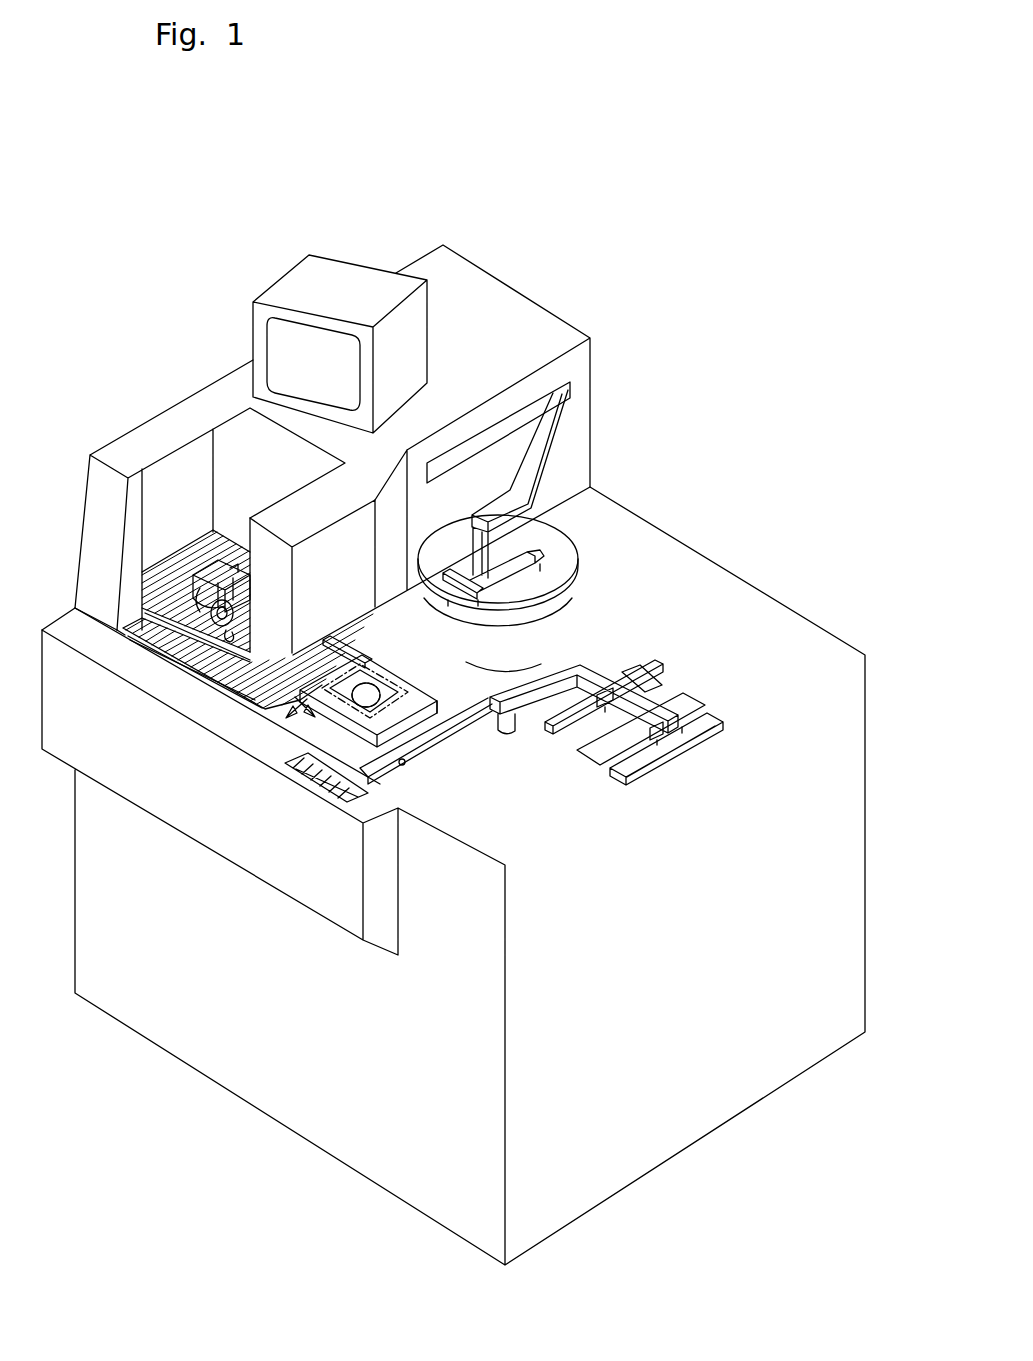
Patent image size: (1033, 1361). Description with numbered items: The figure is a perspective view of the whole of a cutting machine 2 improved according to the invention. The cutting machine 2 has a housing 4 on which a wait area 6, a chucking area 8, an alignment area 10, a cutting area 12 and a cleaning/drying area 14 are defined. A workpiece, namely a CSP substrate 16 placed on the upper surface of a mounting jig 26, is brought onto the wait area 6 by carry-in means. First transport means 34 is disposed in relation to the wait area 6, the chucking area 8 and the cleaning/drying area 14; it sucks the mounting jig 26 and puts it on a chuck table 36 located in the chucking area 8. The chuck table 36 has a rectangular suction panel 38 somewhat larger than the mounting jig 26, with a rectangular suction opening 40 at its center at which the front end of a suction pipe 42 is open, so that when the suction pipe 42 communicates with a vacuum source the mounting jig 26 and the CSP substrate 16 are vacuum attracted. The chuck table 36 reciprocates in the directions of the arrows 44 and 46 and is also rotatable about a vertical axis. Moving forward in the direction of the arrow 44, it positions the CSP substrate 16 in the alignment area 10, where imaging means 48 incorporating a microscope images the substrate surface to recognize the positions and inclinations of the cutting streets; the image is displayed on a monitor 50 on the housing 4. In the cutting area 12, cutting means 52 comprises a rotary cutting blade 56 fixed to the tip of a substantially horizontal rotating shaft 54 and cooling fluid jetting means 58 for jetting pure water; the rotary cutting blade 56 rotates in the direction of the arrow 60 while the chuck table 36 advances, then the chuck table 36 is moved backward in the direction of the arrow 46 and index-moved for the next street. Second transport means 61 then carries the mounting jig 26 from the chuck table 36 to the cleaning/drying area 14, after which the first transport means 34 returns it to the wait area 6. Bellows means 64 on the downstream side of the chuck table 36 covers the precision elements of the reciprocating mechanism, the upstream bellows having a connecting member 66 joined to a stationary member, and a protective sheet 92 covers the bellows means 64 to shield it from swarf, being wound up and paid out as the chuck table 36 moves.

The cutting machine 2 is at (652, 350).
The housing 4 is at (276, 1122).
The wait area 6 is at (578, 762).
The chucking area 8 is at (370, 640).
The alignment area 10 is at (262, 662).
The cutting area 12 is at (140, 650).
The cleaning/drying area 14 is at (572, 605).
The CSP substrate 16 is at (387, 684).
The mounting jig 26 is at (410, 712).
The first transport means 34 is at (600, 660).
The chuck table 36 is at (300, 730).
The suction panel 38 is at (436, 716).
The suction opening 40 is at (345, 687).
The suction pipe 42 is at (365, 698).
The arrow (forward moving direction) 44 is at (371, 666).
The arrow (backward moving direction) 46 is at (318, 692).
The imaging means 48 is at (338, 632).
The monitor 50 is at (300, 278).
The cutting means 52 is at (200, 583).
The rotating shaft 54 is at (113, 632).
The rotary cutting blade 56 is at (217, 592).
The cooling fluid jetting means 58 is at (197, 668).
The arrow (blade rotation direction) 60 is at (212, 613).
The second transport means 61 is at (547, 455).
The bellows means 64 is at (168, 652).
The connecting member 66 is at (402, 777).
The protective sheet 92 is at (187, 670).